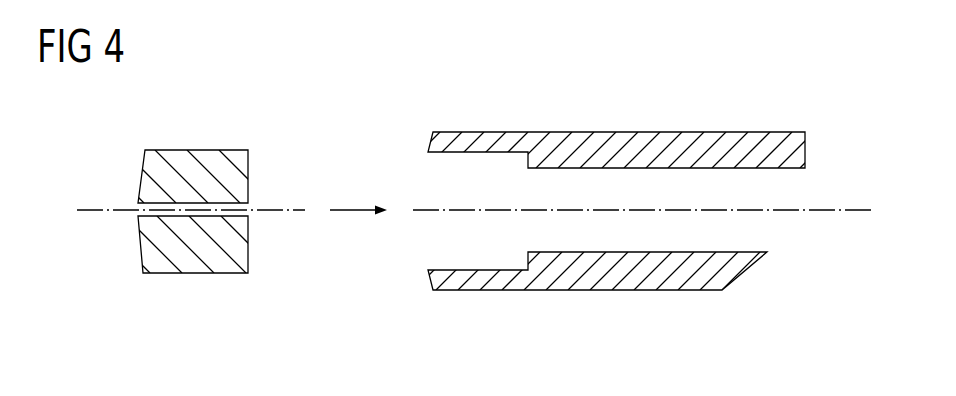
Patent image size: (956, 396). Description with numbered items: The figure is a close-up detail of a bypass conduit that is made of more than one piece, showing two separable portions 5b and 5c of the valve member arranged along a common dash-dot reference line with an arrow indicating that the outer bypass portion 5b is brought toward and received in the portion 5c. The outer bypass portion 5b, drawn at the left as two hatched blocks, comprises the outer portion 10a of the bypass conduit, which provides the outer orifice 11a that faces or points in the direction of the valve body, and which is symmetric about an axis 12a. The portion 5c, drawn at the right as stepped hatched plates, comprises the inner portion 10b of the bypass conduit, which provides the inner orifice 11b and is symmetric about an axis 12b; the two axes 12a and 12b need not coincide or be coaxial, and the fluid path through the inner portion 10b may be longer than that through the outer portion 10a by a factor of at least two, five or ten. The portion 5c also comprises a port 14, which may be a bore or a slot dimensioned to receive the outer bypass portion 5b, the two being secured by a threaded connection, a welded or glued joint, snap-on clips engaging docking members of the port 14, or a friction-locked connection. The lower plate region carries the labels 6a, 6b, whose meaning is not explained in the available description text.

The outer bypass portion 5b is at (285, 170).
The outer portion of the bypass conduit 10a is at (195, 207).
The outer orifice 11a is at (123, 200).
The axis 12a is at (95, 214).
The portion of valve member 5c is at (835, 115).
The inner portion of the bypass conduit 10b is at (667, 183).
The inner orifice 11b is at (825, 242).
The axis 12b is at (862, 207).
The lower component 6a is at (630, 296).
The lower component 6b is at (768, 287).
The port 14 is at (440, 230).